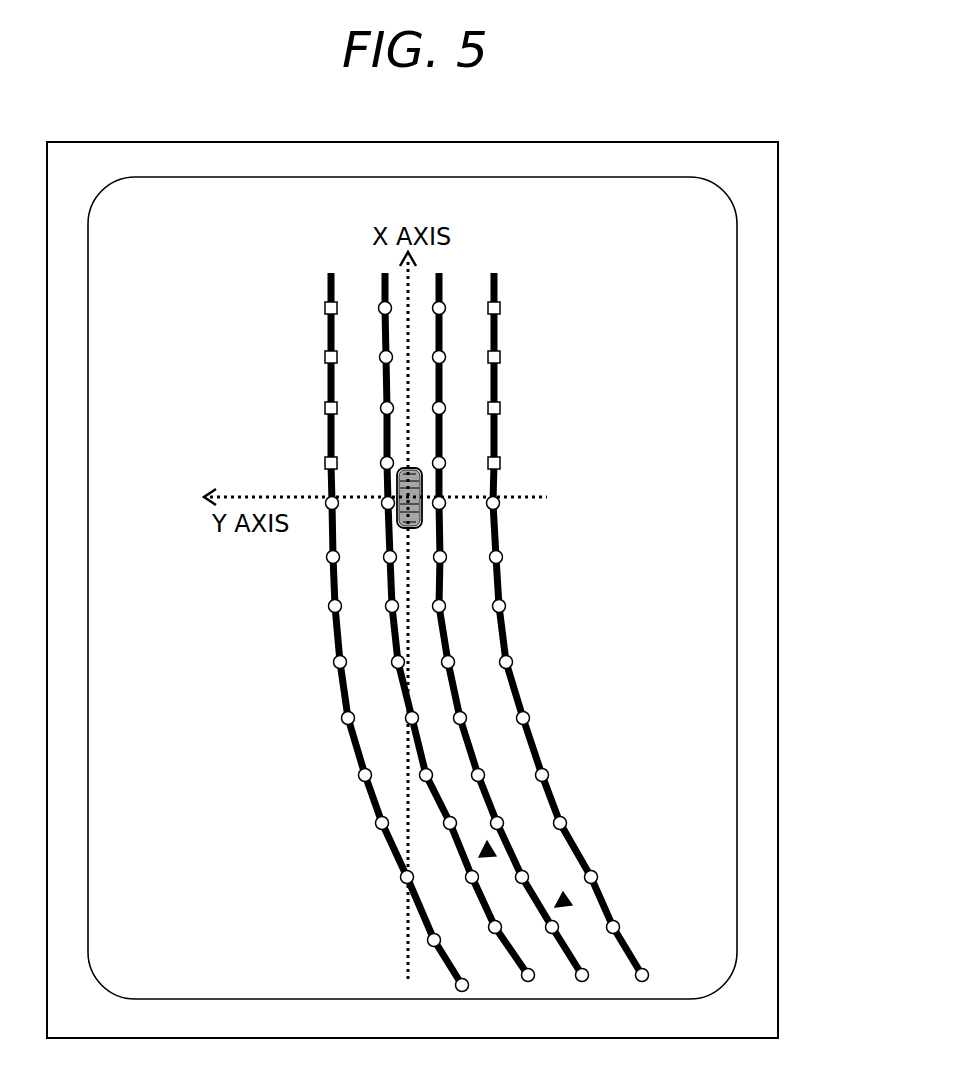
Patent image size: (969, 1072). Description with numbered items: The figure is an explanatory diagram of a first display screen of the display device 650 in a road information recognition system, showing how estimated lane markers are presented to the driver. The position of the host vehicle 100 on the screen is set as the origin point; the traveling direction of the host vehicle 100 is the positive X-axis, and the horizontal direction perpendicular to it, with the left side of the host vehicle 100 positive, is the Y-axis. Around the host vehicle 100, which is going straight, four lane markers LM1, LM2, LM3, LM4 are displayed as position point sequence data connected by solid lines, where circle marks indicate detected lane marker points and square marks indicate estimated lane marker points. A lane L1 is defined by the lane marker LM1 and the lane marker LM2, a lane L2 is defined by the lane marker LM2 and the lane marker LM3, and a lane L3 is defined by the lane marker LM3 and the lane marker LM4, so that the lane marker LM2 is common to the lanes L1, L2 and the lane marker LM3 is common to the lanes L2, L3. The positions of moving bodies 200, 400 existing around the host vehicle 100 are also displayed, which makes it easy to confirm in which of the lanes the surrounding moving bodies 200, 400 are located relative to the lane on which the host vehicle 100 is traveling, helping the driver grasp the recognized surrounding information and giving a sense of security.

The display device 650 is at (750, 265).
The host vehicle 100 is at (422, 482).
The moving body 400 is at (492, 850).
The moving body 200 is at (573, 898).
The lane marker LM1 is at (328, 325).
The lane marker LM2 is at (382, 288).
The lane marker LM3 is at (444, 292).
The lane marker LM4 is at (498, 338).
The lane L1 is at (477, 956).
The lane L2 is at (535, 952).
The lane L3 is at (593, 952).